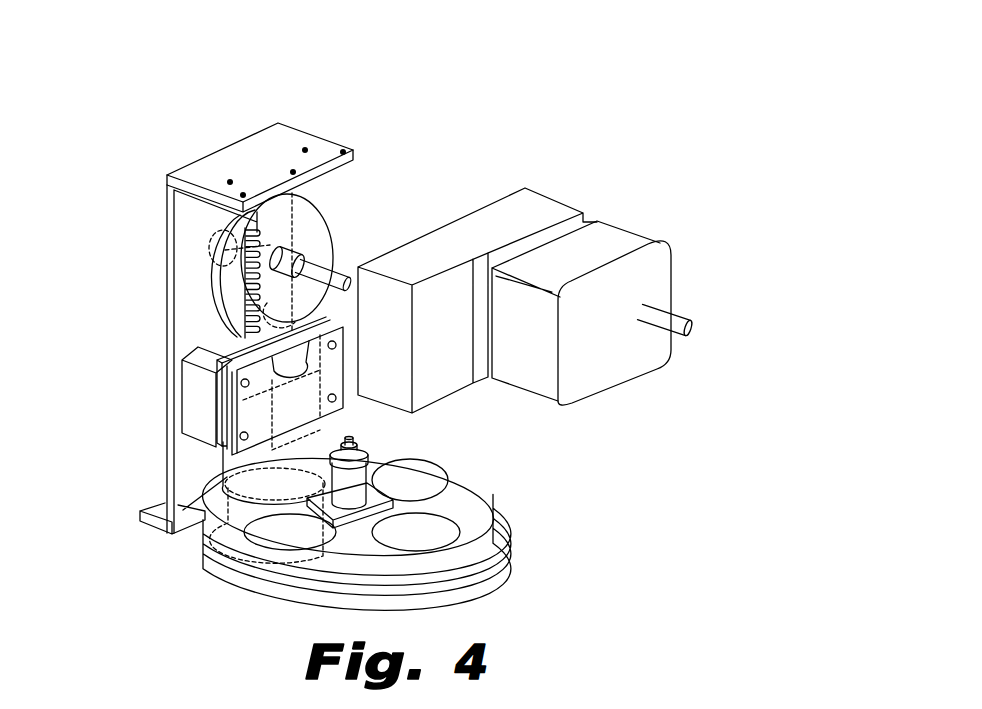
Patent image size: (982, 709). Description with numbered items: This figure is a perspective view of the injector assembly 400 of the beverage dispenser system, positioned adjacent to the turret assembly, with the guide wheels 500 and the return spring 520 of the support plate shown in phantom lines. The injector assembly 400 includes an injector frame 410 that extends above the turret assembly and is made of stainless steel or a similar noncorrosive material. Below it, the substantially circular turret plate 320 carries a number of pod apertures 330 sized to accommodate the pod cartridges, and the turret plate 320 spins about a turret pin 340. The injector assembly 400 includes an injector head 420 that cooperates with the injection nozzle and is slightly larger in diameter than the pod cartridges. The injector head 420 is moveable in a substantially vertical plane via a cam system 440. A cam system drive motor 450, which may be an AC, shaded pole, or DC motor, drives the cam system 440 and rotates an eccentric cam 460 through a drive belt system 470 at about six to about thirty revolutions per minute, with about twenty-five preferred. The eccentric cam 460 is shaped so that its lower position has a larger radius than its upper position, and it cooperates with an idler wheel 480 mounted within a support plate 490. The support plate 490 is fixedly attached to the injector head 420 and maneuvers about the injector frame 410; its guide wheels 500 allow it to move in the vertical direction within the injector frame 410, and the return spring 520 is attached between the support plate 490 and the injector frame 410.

The injector assembly 400 is at (170, 106).
The injector frame 410 is at (192, 351).
The injector head 420 is at (253, 502).
The cam system 440 is at (330, 205).
The cam system drive motor 450 is at (613, 226).
The eccentric cam 460 is at (207, 289).
The drive belt system 470 is at (687, 316).
The idler wheel 480 is at (317, 333).
The support plate 490 is at (222, 422).
The guide wheels 500 is at (220, 383).
The return spring 520 is at (238, 222).
The turret plate 320 is at (490, 491).
The pod apertures 330 is at (416, 478).
The turret pin 340 is at (353, 437).